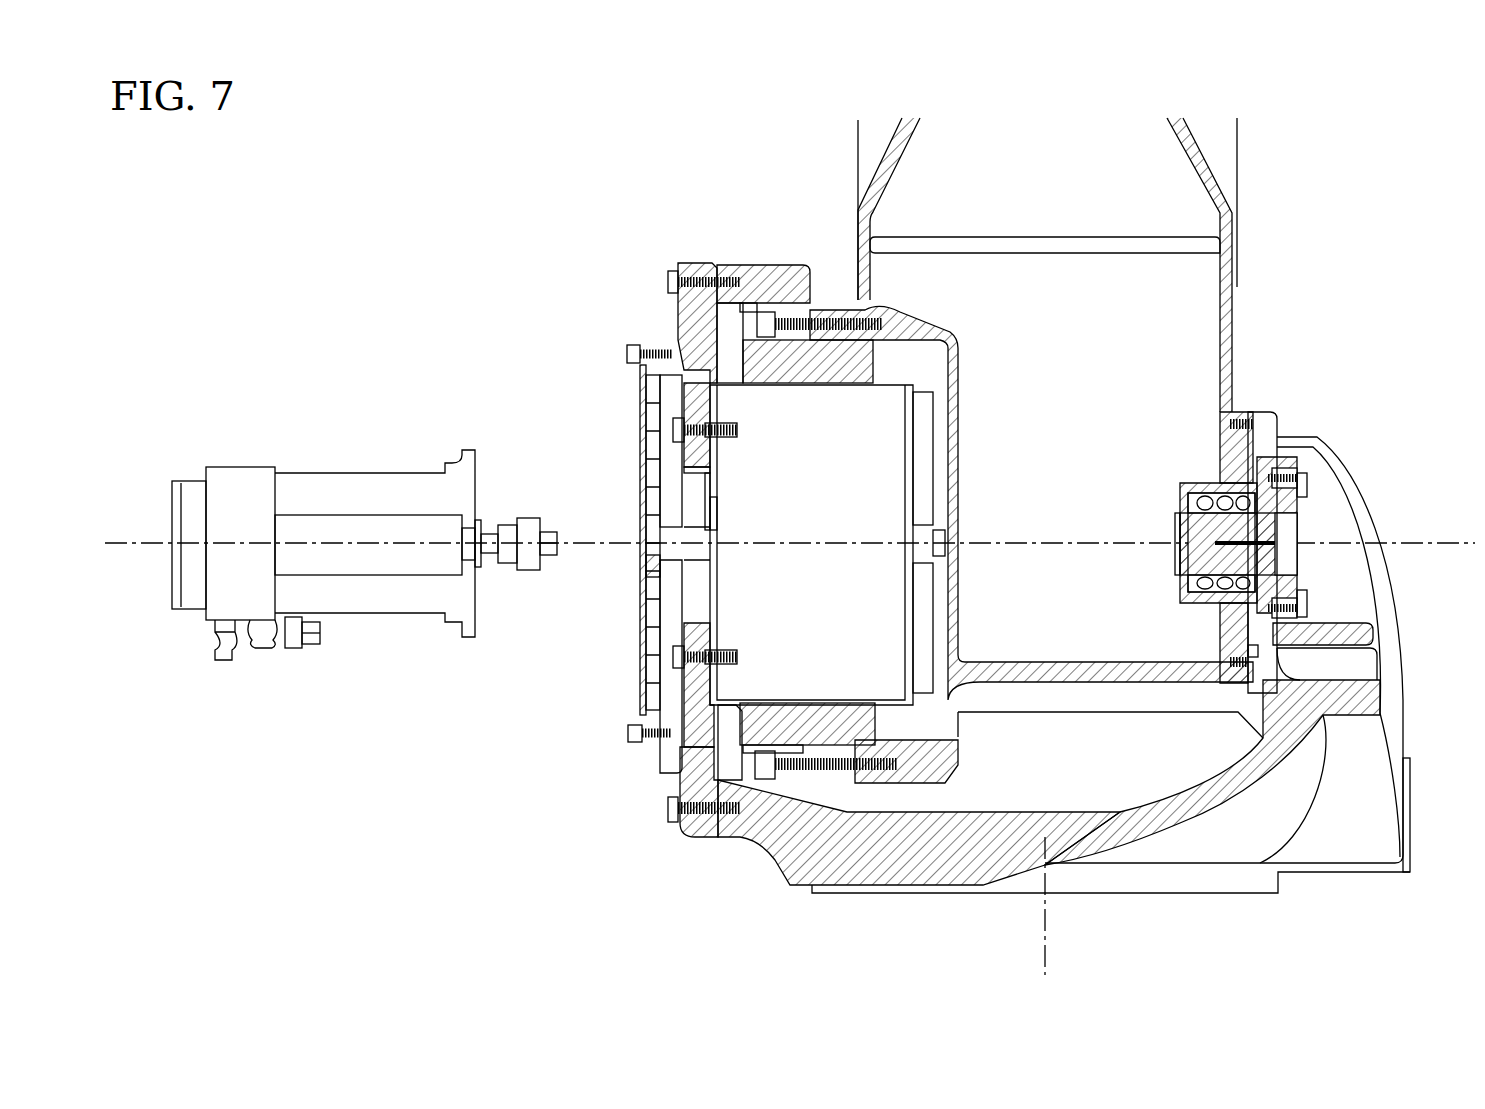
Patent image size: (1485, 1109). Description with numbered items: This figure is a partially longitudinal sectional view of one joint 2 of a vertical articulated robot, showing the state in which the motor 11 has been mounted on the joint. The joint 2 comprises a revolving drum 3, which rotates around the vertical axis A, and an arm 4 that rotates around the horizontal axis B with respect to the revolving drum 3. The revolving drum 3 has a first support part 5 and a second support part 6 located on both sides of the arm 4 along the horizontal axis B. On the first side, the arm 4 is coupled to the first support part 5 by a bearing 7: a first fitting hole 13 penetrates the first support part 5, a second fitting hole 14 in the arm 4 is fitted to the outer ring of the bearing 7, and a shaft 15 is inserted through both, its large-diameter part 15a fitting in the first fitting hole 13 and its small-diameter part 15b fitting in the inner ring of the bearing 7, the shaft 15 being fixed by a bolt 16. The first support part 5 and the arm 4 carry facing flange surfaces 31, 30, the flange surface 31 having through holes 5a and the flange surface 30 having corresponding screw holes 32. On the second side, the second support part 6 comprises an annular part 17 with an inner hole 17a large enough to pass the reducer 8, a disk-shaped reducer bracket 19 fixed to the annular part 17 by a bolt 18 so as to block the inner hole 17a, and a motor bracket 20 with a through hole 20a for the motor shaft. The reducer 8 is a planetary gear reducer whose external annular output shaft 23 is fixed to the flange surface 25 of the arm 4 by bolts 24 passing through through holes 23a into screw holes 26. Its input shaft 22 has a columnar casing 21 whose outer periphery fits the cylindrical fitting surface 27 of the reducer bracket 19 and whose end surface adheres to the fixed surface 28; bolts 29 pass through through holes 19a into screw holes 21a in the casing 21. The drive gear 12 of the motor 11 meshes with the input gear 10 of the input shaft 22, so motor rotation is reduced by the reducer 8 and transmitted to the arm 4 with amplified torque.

The joint 2 is at (607, 205).
The revolving drum 3 is at (778, 883).
The arm 4 is at (1245, 312).
The first support part 5 is at (1277, 412).
The through holes 5a is at (1290, 437).
The second support part 6 is at (693, 258).
The bearing 7 is at (1195, 495).
The reducer 8 is at (833, 306).
The input gear 10 is at (717, 595).
The motor 11 is at (238, 467).
The drive gear 12 is at (540, 525).
The first fitting hole 13 is at (1297, 585).
The second fitting hole 14 is at (1190, 583).
The shaft 15 is at (1312, 558).
The large-diameter part 15a is at (1297, 480).
The small-diameter part 15b is at (1178, 515).
The bolt 16 is at (1307, 485).
The annular part 17 is at (783, 265).
The inner hole 17a is at (748, 305).
The bolt 18 is at (668, 282).
The reducer bracket 19 is at (678, 300).
The through holes 19a is at (673, 430).
The motor bracket 20 is at (645, 700).
The through hole 20a is at (652, 565).
The casing 21 is at (688, 760).
The screw holes 21a is at (740, 430).
The input shaft 22 is at (750, 787).
The output shaft 23 is at (833, 767).
The through holes 23a is at (800, 330).
The bolts 24 is at (883, 325).
The flange surface 25 is at (840, 350).
The screw holes 26 is at (955, 345).
The fitting surface 27 is at (712, 390).
The fixed surface 28 is at (710, 467).
The bolts 29 is at (650, 410).
The flange surface 30 is at (1373, 643).
The flange surface 31 is at (1250, 642).
The screw holes 32 is at (1232, 422).
The vertical axis A is at (1045, 940).
The horizontal axis B is at (138, 537).